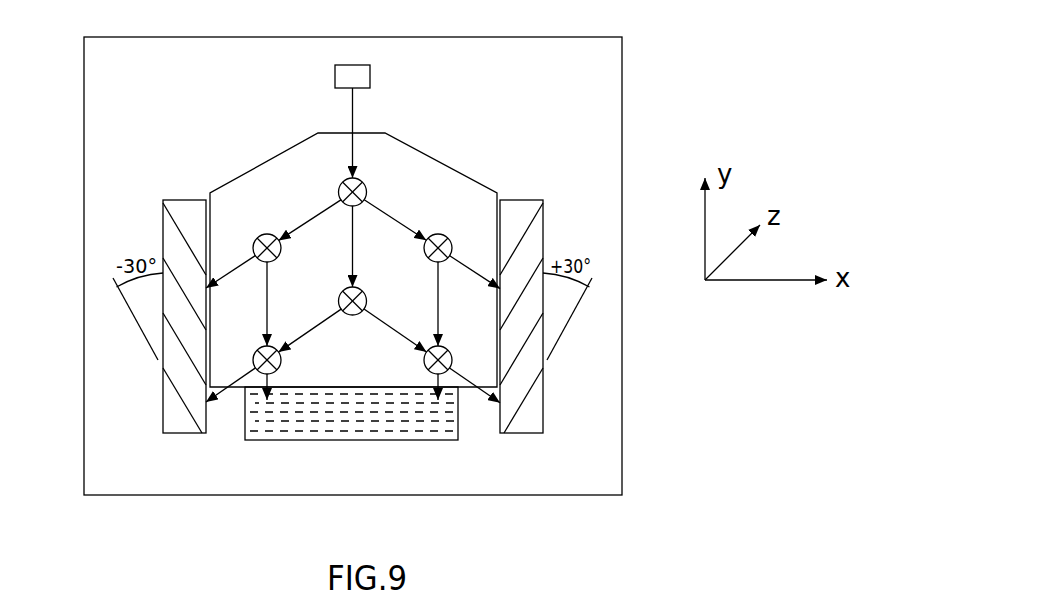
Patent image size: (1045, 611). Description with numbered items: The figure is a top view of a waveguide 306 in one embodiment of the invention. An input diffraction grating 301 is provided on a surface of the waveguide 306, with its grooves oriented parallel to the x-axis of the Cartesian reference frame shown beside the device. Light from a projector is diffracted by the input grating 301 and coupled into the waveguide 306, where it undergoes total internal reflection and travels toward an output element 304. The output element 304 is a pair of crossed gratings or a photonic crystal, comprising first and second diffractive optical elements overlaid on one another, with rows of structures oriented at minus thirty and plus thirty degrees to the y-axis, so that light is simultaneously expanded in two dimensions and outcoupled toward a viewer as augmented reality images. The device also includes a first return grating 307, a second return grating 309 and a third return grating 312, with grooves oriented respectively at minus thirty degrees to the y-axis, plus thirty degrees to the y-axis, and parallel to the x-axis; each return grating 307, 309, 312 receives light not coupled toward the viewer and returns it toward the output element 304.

The input diffraction grating 301 is at (334, 80).
The output element 304 is at (380, 127).
The waveguide 306 is at (592, 67).
The first return grating 307 is at (170, 388).
The second return grating 309 is at (528, 403).
The third return grating 312 is at (413, 427).